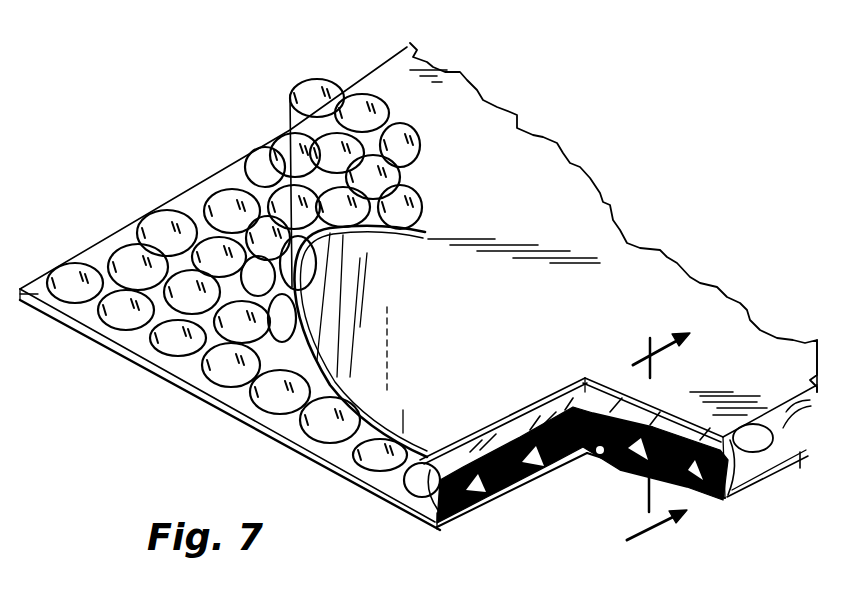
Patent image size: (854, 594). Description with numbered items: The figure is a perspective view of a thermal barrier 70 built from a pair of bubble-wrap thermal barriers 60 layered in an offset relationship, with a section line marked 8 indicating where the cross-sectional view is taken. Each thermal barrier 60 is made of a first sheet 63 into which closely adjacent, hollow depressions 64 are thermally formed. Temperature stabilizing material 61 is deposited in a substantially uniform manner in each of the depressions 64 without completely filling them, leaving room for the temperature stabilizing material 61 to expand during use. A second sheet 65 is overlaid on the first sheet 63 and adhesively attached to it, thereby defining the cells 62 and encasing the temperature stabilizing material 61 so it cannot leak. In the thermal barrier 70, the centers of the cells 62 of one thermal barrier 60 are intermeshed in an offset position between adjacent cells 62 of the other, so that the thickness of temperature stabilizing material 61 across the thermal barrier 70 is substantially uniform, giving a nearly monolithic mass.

The thermal barrier 60 is at (512, 152).
The temperature stabilizing material 61 is at (620, 460).
The cells 62 is at (87, 300).
The first sheet 63 is at (56, 320).
The hollow depressions 64 is at (28, 287).
The second sheet 65 is at (380, 85).
The thermal barrier 70 is at (655, 192).
The section line 8- 8 is at (658, 432).